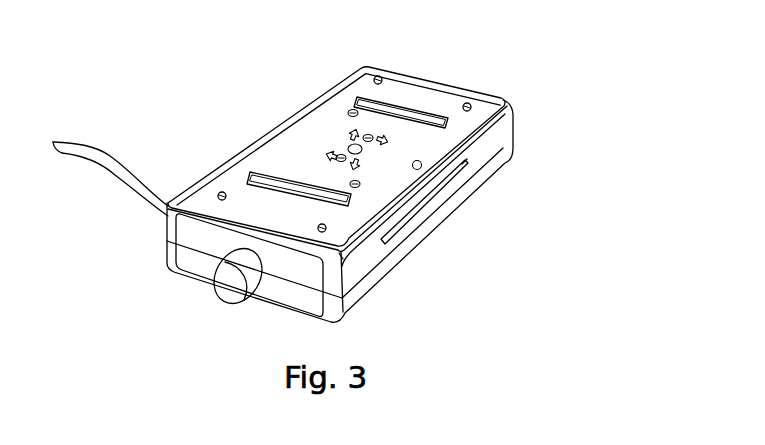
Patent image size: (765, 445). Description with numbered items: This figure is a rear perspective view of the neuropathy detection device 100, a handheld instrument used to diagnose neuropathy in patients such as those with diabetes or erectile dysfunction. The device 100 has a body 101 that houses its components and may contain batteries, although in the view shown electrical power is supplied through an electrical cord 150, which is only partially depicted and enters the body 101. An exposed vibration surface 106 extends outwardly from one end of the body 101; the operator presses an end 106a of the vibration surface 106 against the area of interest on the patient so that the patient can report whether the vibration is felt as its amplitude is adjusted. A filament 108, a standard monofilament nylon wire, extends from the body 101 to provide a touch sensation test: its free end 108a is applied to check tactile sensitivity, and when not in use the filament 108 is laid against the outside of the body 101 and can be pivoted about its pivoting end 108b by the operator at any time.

The neuropathy detection device 100 is at (394, 46).
The body 101 is at (304, 105).
The vibration surface 106 is at (245, 297).
The end of vibration surface 106a is at (221, 302).
The filament 108 is at (433, 192).
The free end 108a is at (381, 240).
The pivoting end 108b is at (467, 162).
The electrical cord 150 is at (122, 183).